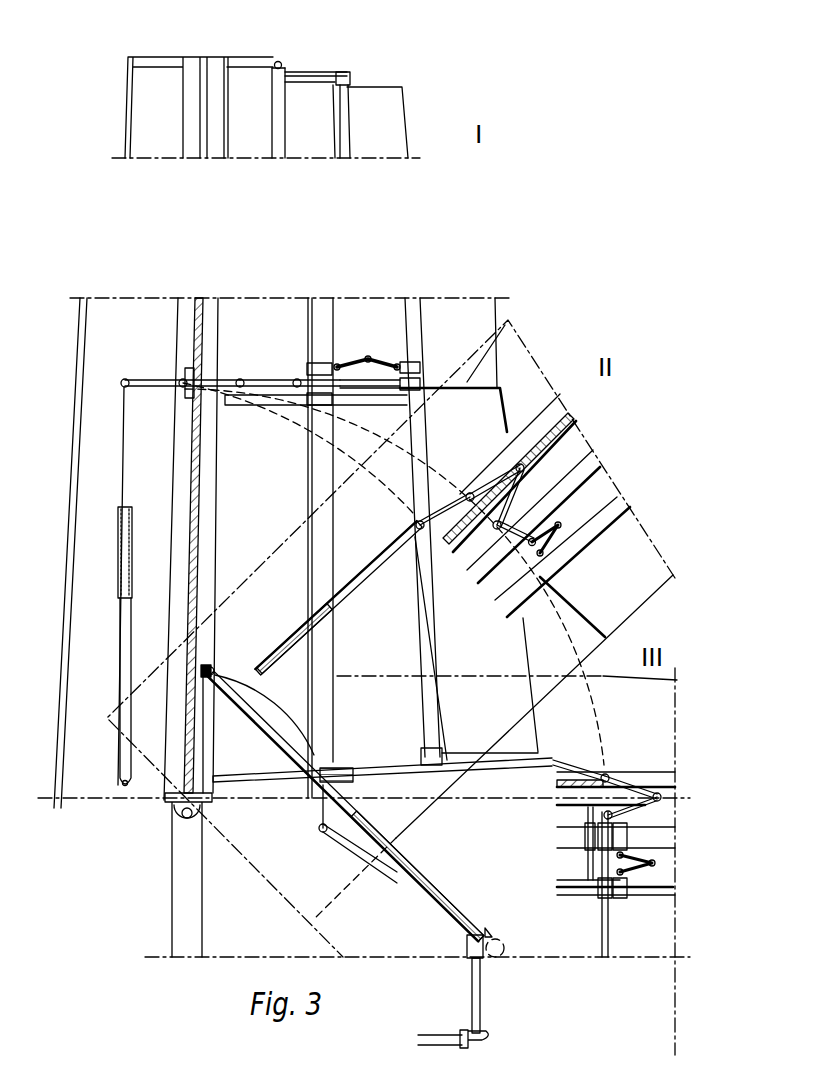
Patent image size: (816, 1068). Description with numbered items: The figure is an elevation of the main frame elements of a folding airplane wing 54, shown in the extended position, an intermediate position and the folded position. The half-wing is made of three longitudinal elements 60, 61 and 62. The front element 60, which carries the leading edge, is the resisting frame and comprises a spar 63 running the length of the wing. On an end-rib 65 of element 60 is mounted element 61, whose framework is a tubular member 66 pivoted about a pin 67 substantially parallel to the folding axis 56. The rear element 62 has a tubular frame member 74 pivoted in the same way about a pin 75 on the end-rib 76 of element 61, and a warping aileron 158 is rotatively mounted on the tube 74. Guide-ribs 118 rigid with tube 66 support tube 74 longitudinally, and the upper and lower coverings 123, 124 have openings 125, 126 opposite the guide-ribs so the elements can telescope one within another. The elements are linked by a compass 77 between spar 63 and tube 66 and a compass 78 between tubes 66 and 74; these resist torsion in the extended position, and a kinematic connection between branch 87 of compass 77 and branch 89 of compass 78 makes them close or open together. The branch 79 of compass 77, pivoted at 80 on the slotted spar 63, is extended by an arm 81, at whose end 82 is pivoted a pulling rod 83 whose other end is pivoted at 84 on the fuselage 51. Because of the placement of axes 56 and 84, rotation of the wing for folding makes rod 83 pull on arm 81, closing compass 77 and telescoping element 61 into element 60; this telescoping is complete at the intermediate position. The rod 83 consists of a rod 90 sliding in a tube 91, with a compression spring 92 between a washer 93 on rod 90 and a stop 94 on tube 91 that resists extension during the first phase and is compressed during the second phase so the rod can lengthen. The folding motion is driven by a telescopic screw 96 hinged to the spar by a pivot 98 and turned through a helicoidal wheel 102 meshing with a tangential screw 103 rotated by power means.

The fuselage 51 is at (38, 798).
The wing 54 is at (439, 410).
The axis 56 is at (182, 823).
The longitudinal element 60 is at (269, 318).
The longitudinal element 61 is at (365, 319).
The longitudinal element 62 is at (455, 319).
The spar 63 is at (200, 330).
The end-rib 65 is at (240, 62).
The tubular member 66 is at (285, 137).
The pin 67 is at (280, 62).
The tubular frame member 74 is at (348, 139).
The pin 75 is at (345, 72).
The end-rib 76 is at (323, 72).
The compass 77 is at (249, 369).
The compass 78 is at (494, 604).
The branch 79 is at (233, 380).
The pivot 80 is at (183, 380).
The arm 81 is at (147, 380).
The end of arm 82 is at (123, 381).
The pulling rod 83 is at (294, 584).
The pivot 84 is at (122, 780).
The branch 87 is at (275, 381).
The branch 89 is at (332, 360).
The rod 90 is at (30, 441).
The tube 91 is at (120, 670).
The compression spring 92 is at (118, 524).
The washer 93 is at (122, 598).
The stop 94 is at (121, 507).
The telescopic screw 96 is at (346, 806).
The pivot 98 is at (209, 668).
The helicoidal wheel 102 is at (500, 938).
The tangential screw 103 is at (472, 952).
The guide-ribs 118 is at (372, 378).
The upper covering 123 is at (365, 380).
The lower covering 124 is at (523, 318).
The opening 125 is at (400, 402).
The opening 126 is at (532, 357).
The warping aileron 158 is at (378, 104).